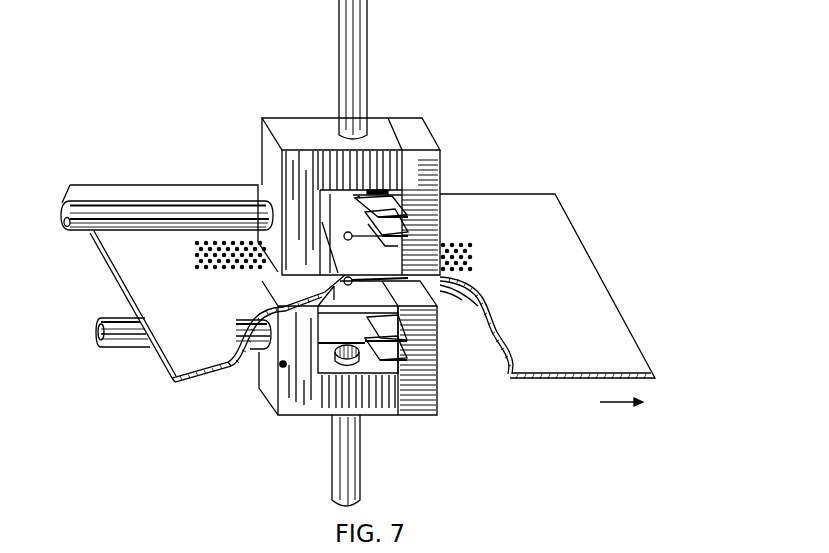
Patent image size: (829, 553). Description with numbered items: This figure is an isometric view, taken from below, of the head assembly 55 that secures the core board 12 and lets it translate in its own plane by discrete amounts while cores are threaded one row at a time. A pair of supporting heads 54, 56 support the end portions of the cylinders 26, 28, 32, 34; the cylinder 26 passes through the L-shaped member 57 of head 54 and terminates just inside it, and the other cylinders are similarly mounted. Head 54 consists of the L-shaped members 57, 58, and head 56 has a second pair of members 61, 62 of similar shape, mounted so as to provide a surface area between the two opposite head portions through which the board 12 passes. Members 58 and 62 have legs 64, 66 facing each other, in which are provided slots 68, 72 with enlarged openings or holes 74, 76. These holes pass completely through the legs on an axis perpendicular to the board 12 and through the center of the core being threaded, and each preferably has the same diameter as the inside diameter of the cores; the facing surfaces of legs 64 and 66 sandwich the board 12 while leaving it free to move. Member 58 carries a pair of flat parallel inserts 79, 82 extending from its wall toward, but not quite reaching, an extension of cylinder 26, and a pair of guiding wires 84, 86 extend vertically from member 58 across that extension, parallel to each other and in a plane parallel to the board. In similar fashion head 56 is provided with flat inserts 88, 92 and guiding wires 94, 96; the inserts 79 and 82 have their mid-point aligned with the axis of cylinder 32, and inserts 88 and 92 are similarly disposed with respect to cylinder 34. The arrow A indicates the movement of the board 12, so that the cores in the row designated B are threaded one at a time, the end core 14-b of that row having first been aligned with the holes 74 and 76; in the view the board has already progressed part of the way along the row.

The core board 12 is at (547, 286).
The end core 14-b is at (296, 283).
The cylinder 26 is at (361, 474).
The cylinder 28 is at (367, 63).
The cylinder 32 is at (122, 349).
The cylinder 34 is at (170, 201).
The supporting head 54 is at (346, 369).
The head assembly 55 is at (212, 88).
The supporting head 56 is at (354, 182).
The L-shaped member 57 is at (262, 392).
The L-shaped member 58 is at (437, 405).
The member 61 is at (262, 149).
The member 62 is at (440, 156).
The leg 64 is at (441, 293).
The leg 66 is at (483, 306).
The slot 68 is at (456, 286).
The slot 72 is at (324, 271).
The hole 74 is at (349, 286).
The hole 76 is at (348, 240).
The flat parallel insert 79 is at (400, 375).
The flat parallel insert 82 is at (408, 330).
The guiding wire 84 is at (287, 366).
The guiding wire 86 is at (345, 340).
The flat insert 88 is at (408, 235).
The flat insert 92 is at (408, 216).
The guiding wire 94 is at (367, 192).
The guiding wire 96 is at (355, 199).
The arrow A is at (630, 403).
The row B— B is at (204, 259).